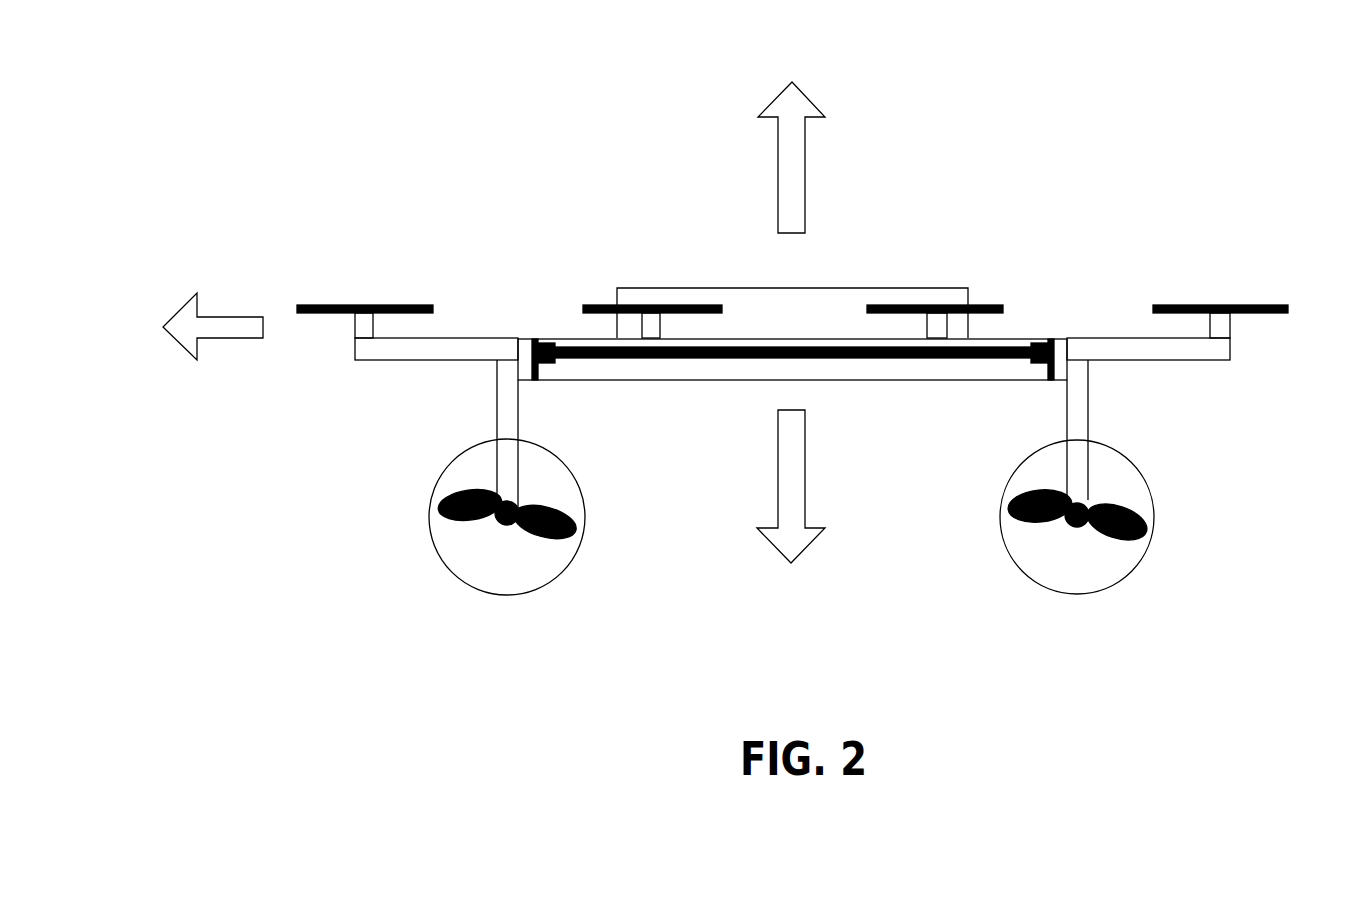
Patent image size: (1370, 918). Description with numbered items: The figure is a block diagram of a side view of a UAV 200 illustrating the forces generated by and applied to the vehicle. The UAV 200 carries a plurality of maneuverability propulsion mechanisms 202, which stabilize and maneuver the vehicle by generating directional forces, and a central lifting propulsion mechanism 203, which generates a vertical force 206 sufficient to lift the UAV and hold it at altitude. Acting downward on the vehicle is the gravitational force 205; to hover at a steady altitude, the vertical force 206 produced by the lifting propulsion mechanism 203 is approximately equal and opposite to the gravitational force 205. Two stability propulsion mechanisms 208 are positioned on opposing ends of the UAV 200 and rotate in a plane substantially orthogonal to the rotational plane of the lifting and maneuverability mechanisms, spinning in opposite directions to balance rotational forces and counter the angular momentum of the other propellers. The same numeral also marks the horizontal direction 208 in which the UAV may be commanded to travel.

The UAV 200 is at (1042, 114).
The maneuverability propulsion mechanisms 202 is at (360, 327).
The lifting propulsion mechanism 203 is at (818, 372).
The gravitational force 205 is at (808, 550).
The vertical force 206 is at (805, 92).
The stability propulsion mechanism 208 is at (235, 317).